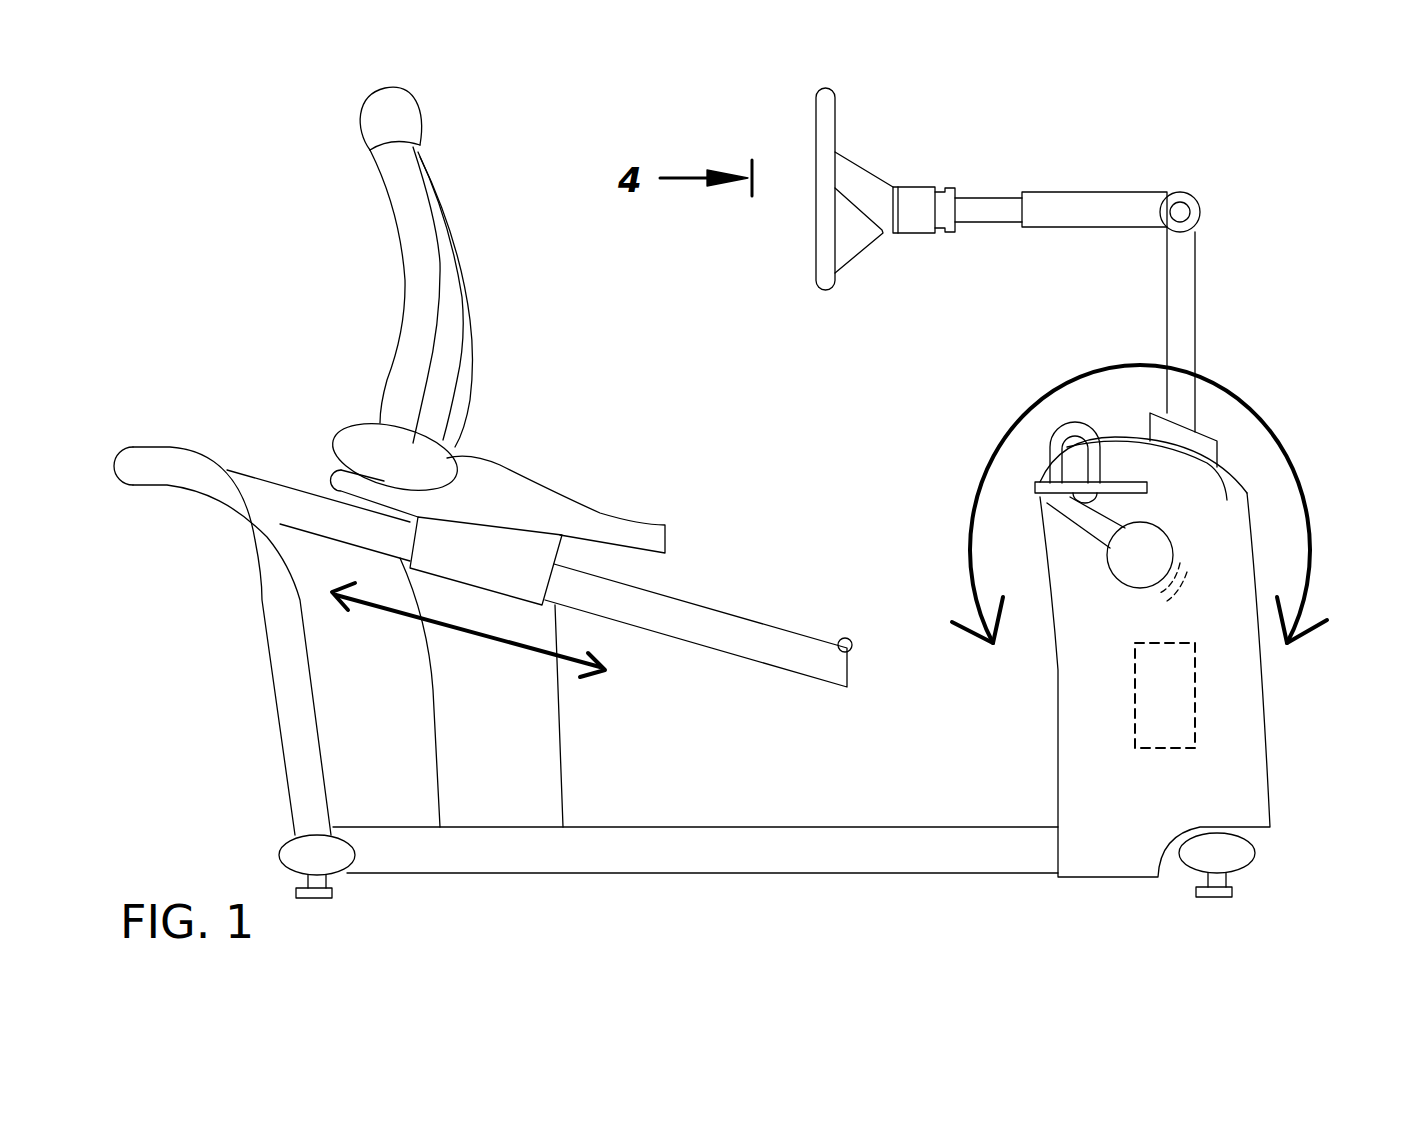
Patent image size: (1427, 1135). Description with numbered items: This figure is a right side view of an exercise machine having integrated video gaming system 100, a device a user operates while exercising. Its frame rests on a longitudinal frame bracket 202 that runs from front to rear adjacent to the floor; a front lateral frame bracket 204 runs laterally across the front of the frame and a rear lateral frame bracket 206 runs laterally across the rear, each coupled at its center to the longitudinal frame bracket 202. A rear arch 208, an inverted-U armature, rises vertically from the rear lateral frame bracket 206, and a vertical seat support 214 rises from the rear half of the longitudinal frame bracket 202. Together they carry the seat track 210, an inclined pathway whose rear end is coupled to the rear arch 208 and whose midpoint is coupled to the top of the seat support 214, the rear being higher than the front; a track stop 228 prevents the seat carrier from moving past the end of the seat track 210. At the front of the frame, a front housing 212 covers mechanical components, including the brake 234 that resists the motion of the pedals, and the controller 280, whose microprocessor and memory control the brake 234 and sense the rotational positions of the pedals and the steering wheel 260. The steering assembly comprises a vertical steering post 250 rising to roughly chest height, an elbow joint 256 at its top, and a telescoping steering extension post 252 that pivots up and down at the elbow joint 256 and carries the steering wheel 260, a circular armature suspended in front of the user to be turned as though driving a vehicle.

The exercise machine having integrated video gaming system 100 is at (252, 251).
The longitudinal frame bracket 202 is at (708, 848).
The front lateral frame bracket 204 is at (1237, 857).
The rear lateral frame bracket 206 is at (292, 855).
The rear arch 208 is at (282, 688).
The seat track 210 is at (722, 635).
The front housing 212 is at (1253, 688).
The seat support 214 is at (537, 767).
The track stop 228 is at (847, 637).
The brake 234 is at (1183, 573).
The vertical steering post 250 is at (1192, 280).
The steering extension post 252 is at (1055, 203).
The elbow joint 256 is at (1192, 213).
The steering wheel 260 is at (830, 123).
The controller 280 is at (1137, 702).